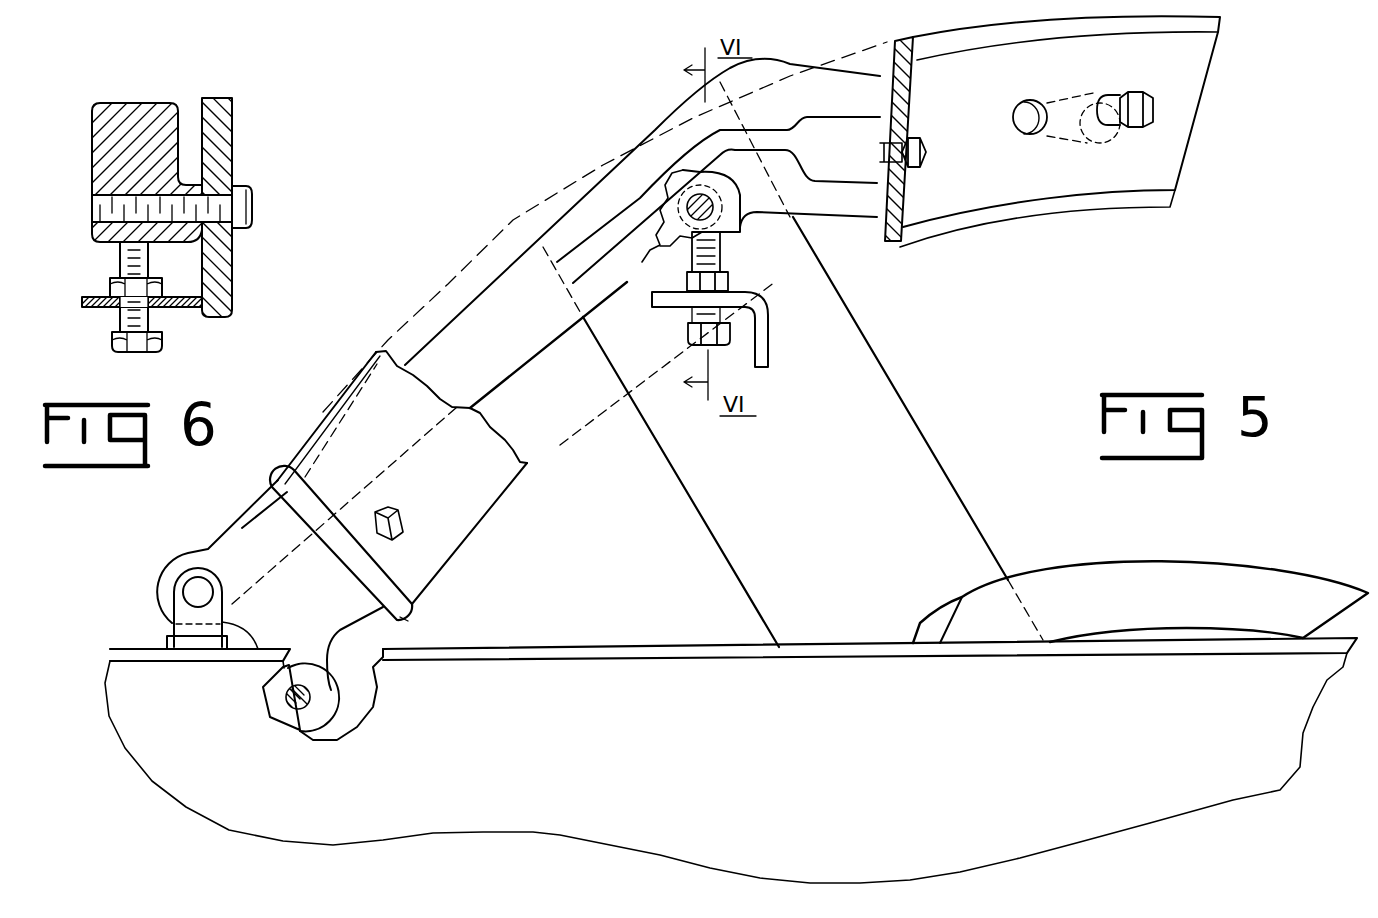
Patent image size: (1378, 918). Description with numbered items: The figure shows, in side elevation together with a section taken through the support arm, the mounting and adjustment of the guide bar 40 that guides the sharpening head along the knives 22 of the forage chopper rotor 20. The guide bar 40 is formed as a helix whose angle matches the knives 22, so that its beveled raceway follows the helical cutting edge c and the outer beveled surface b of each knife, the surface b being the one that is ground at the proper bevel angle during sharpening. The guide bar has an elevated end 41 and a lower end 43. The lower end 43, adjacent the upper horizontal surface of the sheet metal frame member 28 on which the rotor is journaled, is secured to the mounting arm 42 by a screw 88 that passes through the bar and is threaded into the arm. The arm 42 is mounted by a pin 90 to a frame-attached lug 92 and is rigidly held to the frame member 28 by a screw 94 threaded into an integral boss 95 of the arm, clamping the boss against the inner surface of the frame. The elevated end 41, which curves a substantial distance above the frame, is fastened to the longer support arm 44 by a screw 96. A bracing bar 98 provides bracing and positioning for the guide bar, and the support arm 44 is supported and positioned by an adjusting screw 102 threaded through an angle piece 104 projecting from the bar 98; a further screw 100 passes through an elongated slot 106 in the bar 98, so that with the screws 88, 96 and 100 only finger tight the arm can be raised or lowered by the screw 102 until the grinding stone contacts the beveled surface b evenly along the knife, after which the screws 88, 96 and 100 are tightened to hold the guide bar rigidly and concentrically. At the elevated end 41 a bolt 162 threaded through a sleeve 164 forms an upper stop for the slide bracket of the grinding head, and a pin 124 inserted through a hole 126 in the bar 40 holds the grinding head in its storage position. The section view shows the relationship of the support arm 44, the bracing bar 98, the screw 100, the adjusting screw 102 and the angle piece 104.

In FIG. 5, the forage chopper rotor 20 is at (1233, 547).
In FIG. 5, the knives 22 is at (1181, 629).
In FIG. 5, the frame member 28 is at (594, 647).
In FIG. 5, the guide bar 40 is at (504, 510).
In FIG. 5, the elevated end 41 is at (1047, 211).
In FIG. 5, the mounting arm 42 is at (239, 518).
In FIG. 5, the lower end 43 is at (408, 621).
In FIG. 6, the support arm 44 is at (120, 103).
In FIG. 5, the support arm 44 is at (687, 106).
In FIG. 5, the screw 88 is at (396, 512).
In FIG. 5, the pin 90 is at (196, 588).
In FIG. 5, the lug 92 is at (174, 628).
In FIG. 5, the screw 94 is at (268, 712).
In FIG. 5, the boss 95 is at (308, 662).
In FIG. 5, the screw 96 is at (928, 150).
In FIG. 6, the bracing bar 98 is at (234, 300).
In FIG. 5, the bracing bar 98 is at (952, 482).
In FIG. 6, the screw 100 is at (256, 212).
In FIG. 5, the screw 100 is at (722, 204).
In FIG. 6, the adjusting screw 102 is at (120, 264).
In FIG. 5, the adjusting screw 102 is at (688, 334).
In FIG. 6, the angle piece 104 is at (92, 307).
In FIG. 5, the angle piece 104 is at (769, 336).
In FIG. 5, the elongated slot 106 is at (650, 253).
In FIG. 5, the pin 124 is at (1073, 96).
In FIG. 5, the hole 126 is at (1023, 135).
In FIG. 5, the bolt 162 is at (1150, 92).
In FIG. 5, the sleeve 164 is at (1113, 126).
In FIG. 5, the outer beveled surface b is at (947, 613).
In FIG. 5, the helical cutting edge c is at (1097, 565).